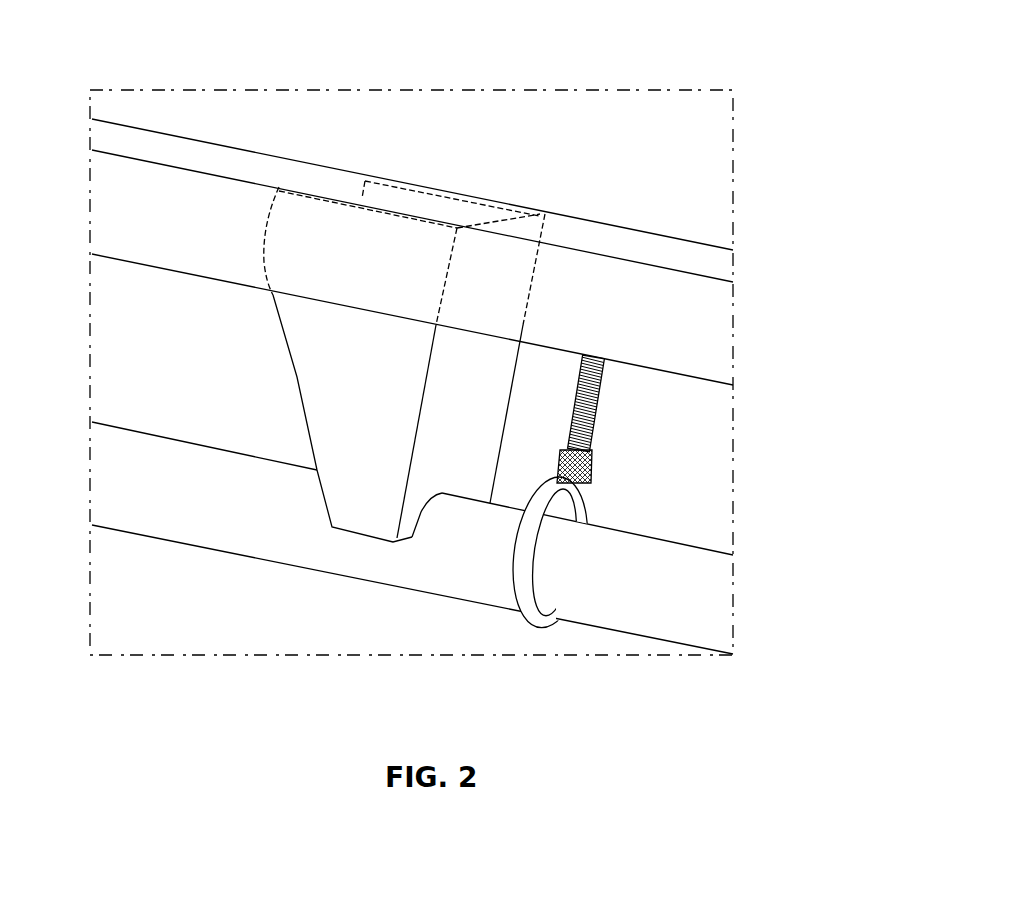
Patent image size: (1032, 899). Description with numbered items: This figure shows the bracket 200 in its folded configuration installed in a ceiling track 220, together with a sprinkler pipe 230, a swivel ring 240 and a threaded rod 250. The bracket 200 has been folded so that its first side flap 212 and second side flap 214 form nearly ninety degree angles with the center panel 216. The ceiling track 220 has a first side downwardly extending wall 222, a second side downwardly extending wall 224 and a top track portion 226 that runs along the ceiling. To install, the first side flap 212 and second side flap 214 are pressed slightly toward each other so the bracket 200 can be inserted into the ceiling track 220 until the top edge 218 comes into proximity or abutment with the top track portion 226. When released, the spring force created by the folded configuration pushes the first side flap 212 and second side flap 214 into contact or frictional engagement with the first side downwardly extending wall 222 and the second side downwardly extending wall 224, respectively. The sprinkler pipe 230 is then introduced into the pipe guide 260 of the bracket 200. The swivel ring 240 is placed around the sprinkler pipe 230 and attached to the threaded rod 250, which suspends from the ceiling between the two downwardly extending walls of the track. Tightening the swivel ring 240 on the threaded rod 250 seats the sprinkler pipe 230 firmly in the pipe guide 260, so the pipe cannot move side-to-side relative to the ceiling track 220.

The bracket 200 is at (443, 275).
The first side flap 212 is at (295, 231).
The second side flap 214 is at (397, 200).
The center panel 216 is at (507, 302).
The top edge 218 is at (450, 190).
The ceiling track 220 is at (475, 386).
The first side downwardly extending wall 222 is at (677, 302).
The second side downwardly extending wall 224 is at (623, 254).
The top track portion 226 is at (705, 264).
The sprinkler pipe 230 is at (708, 640).
The swivel ring 240 is at (592, 496).
The threaded rod 250 is at (600, 397).
The pipe guide 260 is at (430, 512).